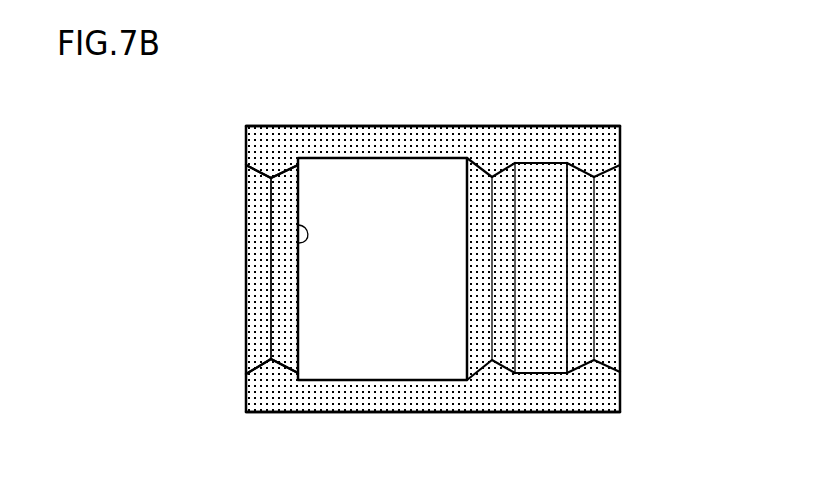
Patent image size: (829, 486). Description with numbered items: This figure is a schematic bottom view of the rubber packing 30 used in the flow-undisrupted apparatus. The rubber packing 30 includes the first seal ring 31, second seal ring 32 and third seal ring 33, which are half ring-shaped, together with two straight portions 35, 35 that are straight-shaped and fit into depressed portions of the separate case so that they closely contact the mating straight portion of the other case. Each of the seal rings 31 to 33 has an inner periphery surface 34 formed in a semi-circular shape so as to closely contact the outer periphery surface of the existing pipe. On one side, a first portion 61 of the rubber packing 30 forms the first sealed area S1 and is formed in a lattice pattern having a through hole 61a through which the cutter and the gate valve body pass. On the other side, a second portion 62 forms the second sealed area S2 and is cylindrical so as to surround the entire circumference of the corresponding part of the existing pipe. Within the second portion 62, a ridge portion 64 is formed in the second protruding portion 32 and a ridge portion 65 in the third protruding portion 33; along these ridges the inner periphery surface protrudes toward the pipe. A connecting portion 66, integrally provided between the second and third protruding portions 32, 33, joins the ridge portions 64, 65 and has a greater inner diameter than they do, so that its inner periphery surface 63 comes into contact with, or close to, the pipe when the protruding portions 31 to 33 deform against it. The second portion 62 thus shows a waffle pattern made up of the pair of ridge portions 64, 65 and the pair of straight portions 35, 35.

The rubber packing 30 is at (422, 126).
The first seal ring 31 is at (257, 188).
The second seal ring 32 is at (475, 186).
The third seal ring 33 is at (610, 187).
The inner periphery surface 34 is at (283, 328).
The straight portion 35 is at (323, 126).
The first portion 61 is at (374, 126).
The through hole 61a is at (298, 225).
The second portion 62 is at (542, 180).
The inner periphery surface of the connecting portion 63 is at (555, 180).
The ridge portion 64 is at (493, 251).
The ridge portion 65 is at (593, 308).
The connecting portion 66 is at (541, 358).
The first sealed area S1 is at (313, 268).
The second sealed area S2 is at (552, 270).